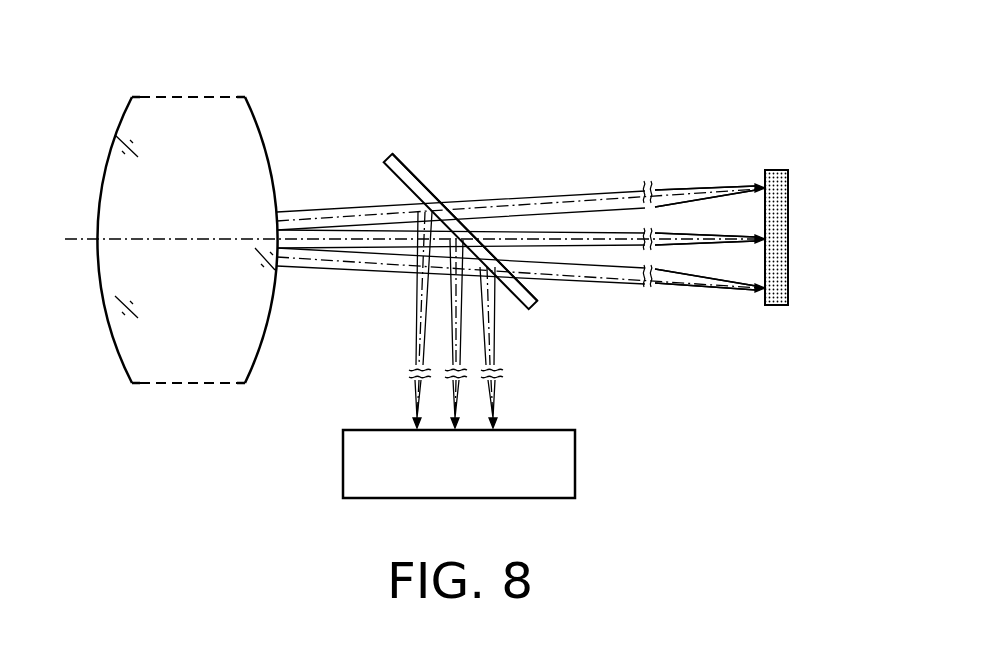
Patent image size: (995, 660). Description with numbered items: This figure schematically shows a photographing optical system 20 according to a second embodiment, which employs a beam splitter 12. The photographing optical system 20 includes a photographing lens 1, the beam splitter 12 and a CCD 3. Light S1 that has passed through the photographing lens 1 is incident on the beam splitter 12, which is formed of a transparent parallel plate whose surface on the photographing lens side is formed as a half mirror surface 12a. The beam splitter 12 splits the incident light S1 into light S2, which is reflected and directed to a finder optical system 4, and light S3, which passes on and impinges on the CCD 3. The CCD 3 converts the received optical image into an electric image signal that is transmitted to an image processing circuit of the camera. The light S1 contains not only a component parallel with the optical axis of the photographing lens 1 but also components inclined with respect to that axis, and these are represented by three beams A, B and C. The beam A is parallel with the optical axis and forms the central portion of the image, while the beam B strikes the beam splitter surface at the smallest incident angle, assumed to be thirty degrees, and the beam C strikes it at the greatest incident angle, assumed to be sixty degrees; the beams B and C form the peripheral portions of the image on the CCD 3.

The photographing lens 1 is at (206, 118).
The CCD 3 is at (776, 173).
The finder optical system 4 is at (576, 458).
The beam splitter 12 is at (432, 208).
The half mirror surface 12a is at (443, 148).
The photographing optical system 20 is at (554, 90).
The light S1 is at (521, 248).
The light S2 is at (472, 320).
The light S3 is at (670, 249).
The beam A is at (366, 248).
The beam B is at (346, 210).
The beam C is at (373, 270).